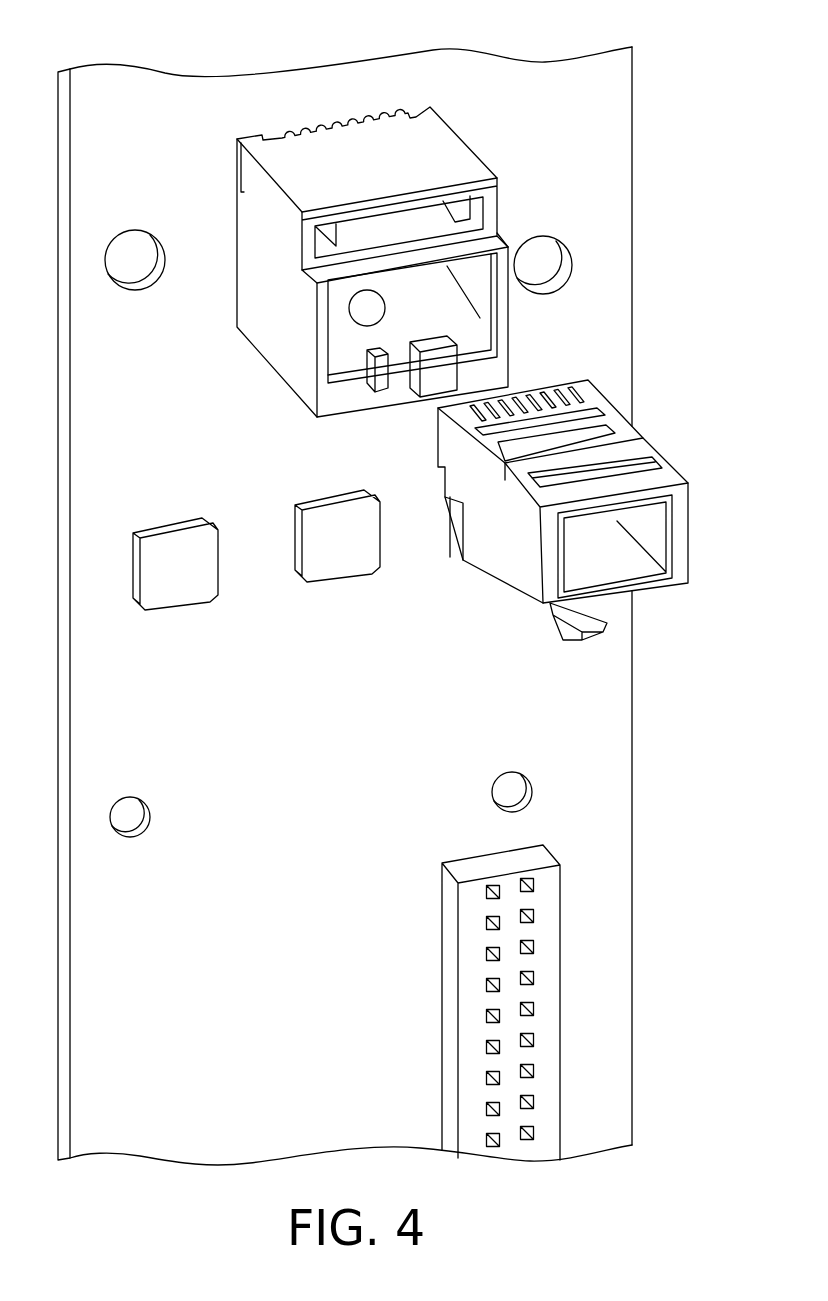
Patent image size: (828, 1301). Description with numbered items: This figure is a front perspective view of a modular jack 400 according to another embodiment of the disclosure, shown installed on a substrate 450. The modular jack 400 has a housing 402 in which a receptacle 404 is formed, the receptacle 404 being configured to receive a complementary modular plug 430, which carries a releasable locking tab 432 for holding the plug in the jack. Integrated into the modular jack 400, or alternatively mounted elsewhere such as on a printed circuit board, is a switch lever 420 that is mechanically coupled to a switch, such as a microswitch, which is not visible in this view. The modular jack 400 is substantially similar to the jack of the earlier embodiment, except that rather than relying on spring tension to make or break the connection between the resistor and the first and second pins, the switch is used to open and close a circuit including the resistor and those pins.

The modular jack 400 is at (447, 209).
The housing 402 is at (452, 168).
The receptacle 404 is at (472, 298).
The switch lever 420 is at (367, 308).
The modular plug 430 is at (596, 512).
The releasable locking tab 432 is at (580, 612).
The substrate 450 is at (585, 85).